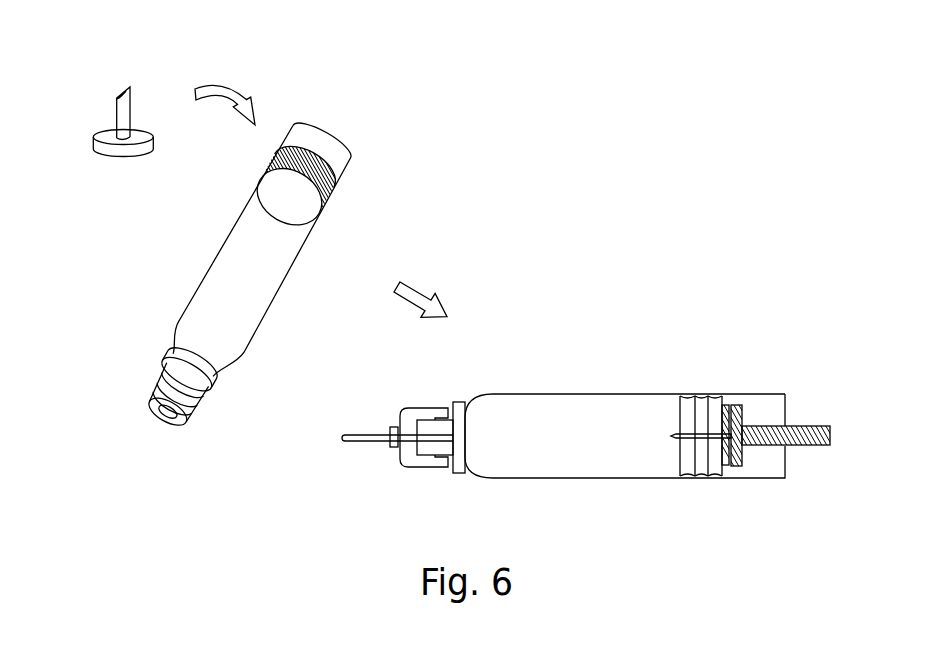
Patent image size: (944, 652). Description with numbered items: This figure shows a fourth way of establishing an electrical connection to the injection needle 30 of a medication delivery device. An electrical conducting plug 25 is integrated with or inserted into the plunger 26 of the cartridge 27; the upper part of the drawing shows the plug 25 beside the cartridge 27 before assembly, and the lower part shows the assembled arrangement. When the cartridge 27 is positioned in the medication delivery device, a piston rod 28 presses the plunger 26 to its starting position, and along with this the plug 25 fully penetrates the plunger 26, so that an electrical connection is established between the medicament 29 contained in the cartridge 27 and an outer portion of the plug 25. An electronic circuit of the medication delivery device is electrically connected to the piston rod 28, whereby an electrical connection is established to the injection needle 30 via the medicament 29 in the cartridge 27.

The electrical conducting plug 25 is at (142, 135).
The plunger 26 is at (313, 155).
The cartridge 27 is at (205, 285).
The piston rod 28 is at (795, 417).
The medicament 29 is at (527, 405).
The injection needle 30 is at (353, 438).